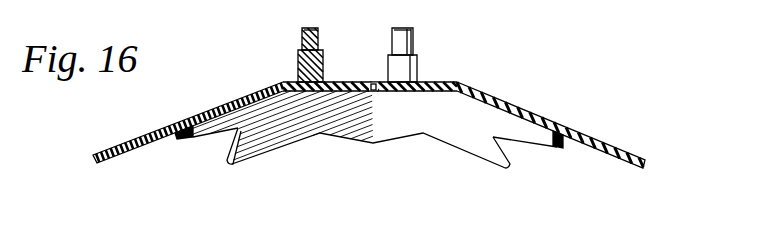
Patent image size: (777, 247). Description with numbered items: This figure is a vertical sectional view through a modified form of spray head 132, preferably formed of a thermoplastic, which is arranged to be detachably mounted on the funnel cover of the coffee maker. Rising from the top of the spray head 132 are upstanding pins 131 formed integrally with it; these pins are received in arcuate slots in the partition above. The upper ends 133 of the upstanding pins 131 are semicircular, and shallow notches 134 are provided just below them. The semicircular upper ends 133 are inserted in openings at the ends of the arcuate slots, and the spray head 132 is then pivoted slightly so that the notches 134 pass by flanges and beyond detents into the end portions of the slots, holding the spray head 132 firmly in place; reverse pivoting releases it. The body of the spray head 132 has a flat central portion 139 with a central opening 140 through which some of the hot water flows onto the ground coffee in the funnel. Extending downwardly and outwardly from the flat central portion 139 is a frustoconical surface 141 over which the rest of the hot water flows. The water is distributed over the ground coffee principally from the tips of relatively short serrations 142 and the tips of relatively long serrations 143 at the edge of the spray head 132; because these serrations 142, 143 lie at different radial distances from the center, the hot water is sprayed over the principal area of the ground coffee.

The upstanding pins 131 is at (391, 67).
The spray head 132 is at (378, 117).
The upper ends of the upstanding pins 133 is at (302, 31).
The shallow notches 134 is at (395, 47).
The flat central portion 139 is at (437, 92).
The central opening 140 is at (375, 92).
The frustoconical surface 141 is at (520, 108).
The relatively short serrations 142 is at (177, 137).
The relatively long serrations 143 is at (227, 163).